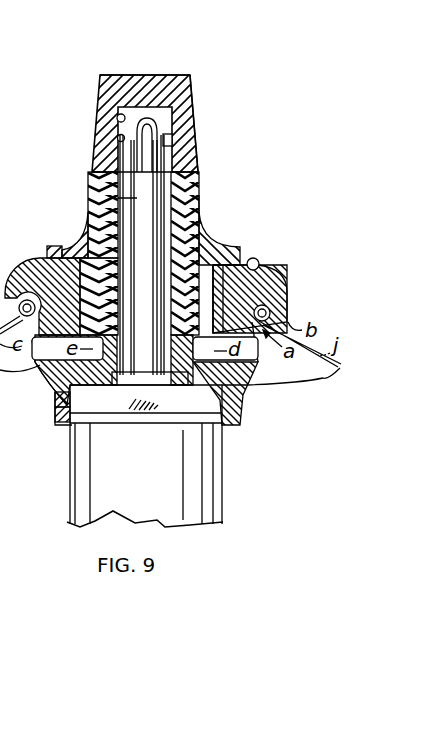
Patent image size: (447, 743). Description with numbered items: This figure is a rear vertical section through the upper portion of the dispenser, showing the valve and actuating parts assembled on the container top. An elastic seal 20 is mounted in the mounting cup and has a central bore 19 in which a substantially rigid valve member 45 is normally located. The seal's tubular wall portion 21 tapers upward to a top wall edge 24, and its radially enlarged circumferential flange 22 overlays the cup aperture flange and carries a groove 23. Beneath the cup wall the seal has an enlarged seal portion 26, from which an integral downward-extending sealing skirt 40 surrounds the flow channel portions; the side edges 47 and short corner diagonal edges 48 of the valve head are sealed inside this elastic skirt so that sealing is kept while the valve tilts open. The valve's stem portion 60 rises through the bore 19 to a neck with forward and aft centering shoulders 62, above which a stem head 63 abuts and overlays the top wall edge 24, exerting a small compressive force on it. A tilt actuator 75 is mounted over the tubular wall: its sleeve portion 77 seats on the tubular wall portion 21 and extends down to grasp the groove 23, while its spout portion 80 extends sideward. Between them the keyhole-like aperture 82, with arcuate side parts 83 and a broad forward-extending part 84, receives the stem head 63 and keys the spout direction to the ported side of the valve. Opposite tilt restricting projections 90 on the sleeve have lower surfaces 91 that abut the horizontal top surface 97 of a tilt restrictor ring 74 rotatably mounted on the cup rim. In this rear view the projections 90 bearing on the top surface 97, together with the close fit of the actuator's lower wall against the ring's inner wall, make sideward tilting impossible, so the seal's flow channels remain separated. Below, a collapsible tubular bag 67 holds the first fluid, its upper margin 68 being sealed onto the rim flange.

The forward-extending part 84 is at (145, 75).
The tilt actuator 75 is at (97, 95).
The spout portion 80 is at (117, 118).
The arcuate side parts 83 is at (117, 138).
The centering shoulders 62 is at (92, 165).
The sleeve portion 77 is at (90, 185).
The stem portion 60 is at (132, 203).
The horizontal top surface 97 is at (58, 246).
The tilt restricting projections 90 is at (47, 250).
The stem head 63 is at (150, 118).
The keyhole-like aperture 82 is at (172, 140).
The top wall edge 24 is at (198, 152).
The bore 19 is at (199, 185).
The tubular wall portion 21 is at (199, 205).
The elastic seal 20 is at (199, 228).
The lower surfaces 91 is at (259, 263).
The circumferential flange 22 is at (203, 313).
The groove 23 is at (215, 316).
The tilt restrictor ring 74 is at (296, 312).
The enlarged seal portion 26 is at (259, 364).
The valve member 45 is at (145, 373).
The side edges 47 is at (55, 400).
The corner diagonal edges 48 is at (55, 418).
The sealing skirt 40 is at (65, 432).
The upper margin 68 is at (188, 427).
The collapsible tubular bag 67 is at (208, 497).